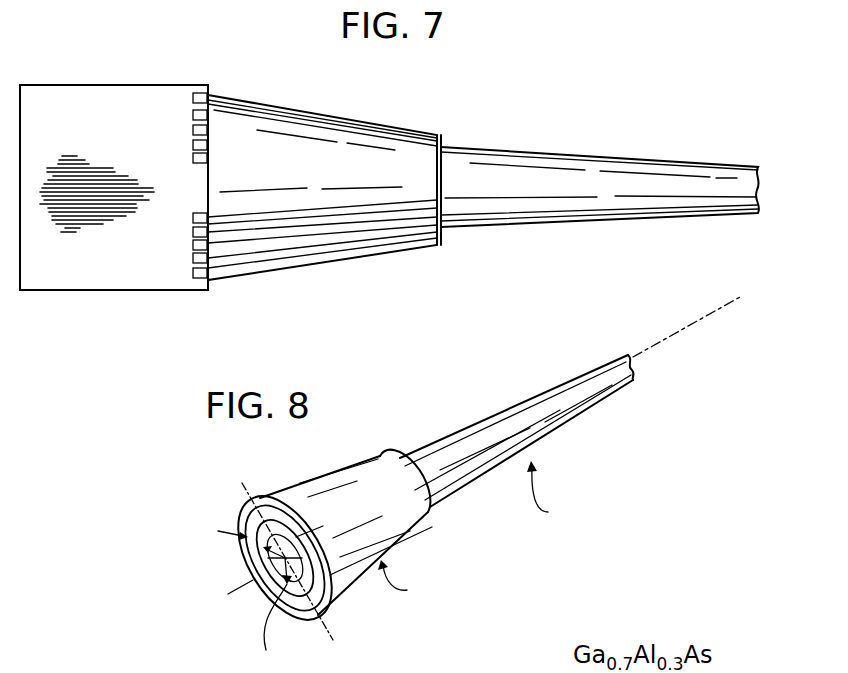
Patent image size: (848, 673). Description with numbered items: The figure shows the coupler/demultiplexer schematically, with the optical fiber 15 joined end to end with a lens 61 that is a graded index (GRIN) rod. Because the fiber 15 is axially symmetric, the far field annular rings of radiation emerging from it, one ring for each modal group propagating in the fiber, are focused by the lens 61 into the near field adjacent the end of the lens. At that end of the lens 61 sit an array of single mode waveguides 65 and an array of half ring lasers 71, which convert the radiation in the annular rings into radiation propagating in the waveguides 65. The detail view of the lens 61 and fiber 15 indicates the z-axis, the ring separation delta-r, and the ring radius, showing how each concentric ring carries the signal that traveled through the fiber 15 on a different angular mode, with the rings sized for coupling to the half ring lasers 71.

In FIG. 7, the half ring lasers 71 is at (97, 100).
In FIG. 7, the single mode waveguides 65 is at (193, 150).
In FIG. 7, the lens 61 is at (333, 135).
In FIG. 8, the lens 61 is at (392, 538).
In FIG. 7, the fiber 15 is at (570, 170).
In FIG. 8, the fiber 15 is at (600, 396).